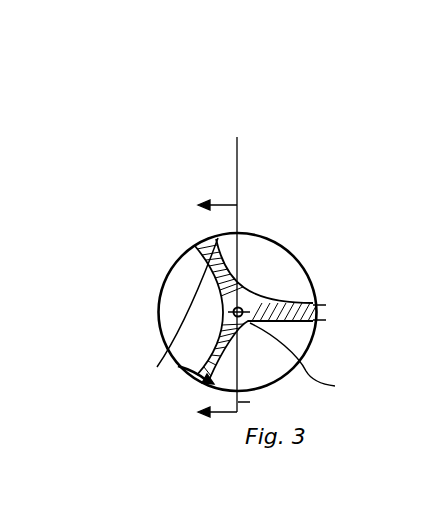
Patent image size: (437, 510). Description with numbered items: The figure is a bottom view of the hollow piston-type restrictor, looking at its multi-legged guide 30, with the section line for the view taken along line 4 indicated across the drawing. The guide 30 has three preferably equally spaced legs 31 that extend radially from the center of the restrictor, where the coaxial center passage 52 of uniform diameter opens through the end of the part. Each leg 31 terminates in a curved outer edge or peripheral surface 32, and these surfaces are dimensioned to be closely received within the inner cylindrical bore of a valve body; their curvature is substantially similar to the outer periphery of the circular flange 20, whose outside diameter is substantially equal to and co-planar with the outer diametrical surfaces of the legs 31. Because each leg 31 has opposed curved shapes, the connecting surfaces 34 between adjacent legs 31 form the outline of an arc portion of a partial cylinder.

The circular flange or piston 20 is at (293, 256).
The multi-legged guide 30 is at (299, 291).
The legs 31 is at (180, 364).
The curved outer edge or peripheral surfaces 32 is at (188, 257).
The connecting surfaces 34 is at (258, 304).
The center passage 52 is at (240, 296).
The section line 4- 4 is at (223, 291).